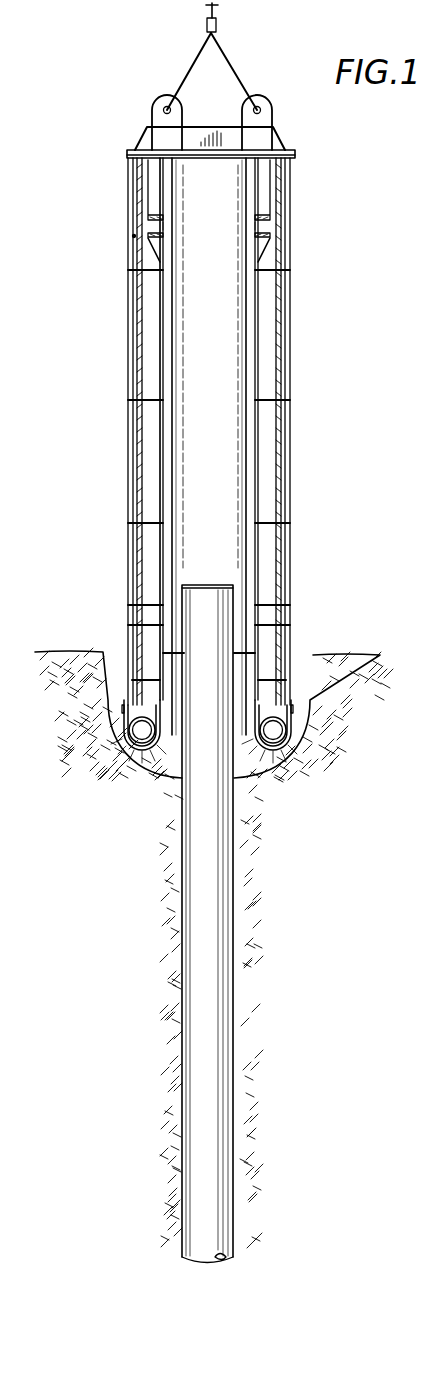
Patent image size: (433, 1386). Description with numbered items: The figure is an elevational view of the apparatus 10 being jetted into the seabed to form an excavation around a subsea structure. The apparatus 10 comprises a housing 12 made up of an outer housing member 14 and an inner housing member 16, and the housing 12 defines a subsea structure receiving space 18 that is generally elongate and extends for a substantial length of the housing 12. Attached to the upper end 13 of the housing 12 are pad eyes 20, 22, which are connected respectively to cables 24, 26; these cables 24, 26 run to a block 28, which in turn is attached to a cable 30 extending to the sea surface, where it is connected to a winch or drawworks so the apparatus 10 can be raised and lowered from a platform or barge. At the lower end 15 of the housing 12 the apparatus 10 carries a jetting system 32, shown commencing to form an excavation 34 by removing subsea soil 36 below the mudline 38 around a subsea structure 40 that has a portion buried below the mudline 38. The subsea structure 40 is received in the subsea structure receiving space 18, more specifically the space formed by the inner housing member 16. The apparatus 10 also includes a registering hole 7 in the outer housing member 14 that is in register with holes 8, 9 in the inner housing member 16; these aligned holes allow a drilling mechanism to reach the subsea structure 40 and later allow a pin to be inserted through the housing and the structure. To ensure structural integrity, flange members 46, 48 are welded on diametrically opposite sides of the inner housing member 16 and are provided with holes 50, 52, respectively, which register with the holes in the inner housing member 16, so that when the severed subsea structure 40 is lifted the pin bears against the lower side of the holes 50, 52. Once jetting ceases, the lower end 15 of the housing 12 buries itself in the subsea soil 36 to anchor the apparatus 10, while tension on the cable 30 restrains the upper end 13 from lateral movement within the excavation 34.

The registering hole 7 is at (133, 236).
The hole in inner housing member 8 is at (165, 226).
The hole in inner housing member 9 is at (262, 226).
The apparatus 10 is at (95, 158).
The housing 12 is at (128, 392).
The upper end of housing 13 is at (296, 156).
The outer housing member 14 is at (289, 370).
The lower end of housing 15 is at (280, 762).
The inner housing member 16 is at (160, 472).
The subsea structure receiving space 18 is at (225, 443).
The pad eye 20 is at (283, 88).
The pad eye 22 is at (152, 100).
The cable 24 is at (228, 52).
The cable 26 is at (193, 58).
The block 28 is at (205, 27).
The cable 30 is at (222, 10).
The jetting system 32 is at (300, 740).
The excavation 34 is at (302, 655).
The subsea soil 36 is at (118, 745).
The mudline 38 is at (378, 655).
The subsea structure 40 is at (195, 895).
The flange member 46 is at (155, 198).
The flange member 48 is at (267, 192).
The hole in flange member 50 is at (150, 247).
The hole in flange member 52 is at (270, 247).